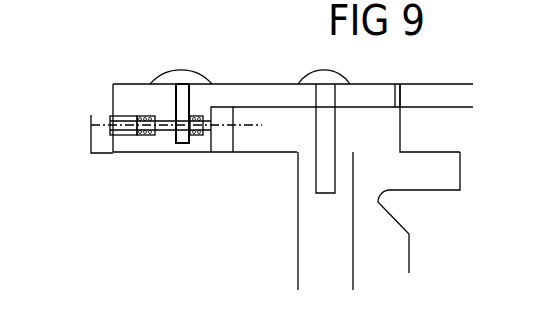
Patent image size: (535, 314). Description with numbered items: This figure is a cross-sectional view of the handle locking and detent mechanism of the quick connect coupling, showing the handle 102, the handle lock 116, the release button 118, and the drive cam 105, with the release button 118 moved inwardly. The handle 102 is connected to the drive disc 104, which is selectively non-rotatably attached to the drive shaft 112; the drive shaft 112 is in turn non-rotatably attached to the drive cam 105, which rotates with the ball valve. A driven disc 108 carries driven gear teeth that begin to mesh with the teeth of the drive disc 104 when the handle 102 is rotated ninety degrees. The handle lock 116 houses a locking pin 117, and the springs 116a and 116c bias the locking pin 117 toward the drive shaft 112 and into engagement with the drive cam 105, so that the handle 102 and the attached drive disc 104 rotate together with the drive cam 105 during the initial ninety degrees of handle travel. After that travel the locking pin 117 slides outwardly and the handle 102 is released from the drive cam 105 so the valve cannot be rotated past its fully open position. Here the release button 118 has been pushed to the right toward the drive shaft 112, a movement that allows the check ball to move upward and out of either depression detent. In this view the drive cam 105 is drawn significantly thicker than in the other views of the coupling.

The handle 102 is at (257, 90).
The drive disc 104 is at (358, 92).
The drive cam 105 is at (387, 125).
The driven disc 108 is at (427, 92).
The drive shaft 112 is at (320, 212).
The handle lock 116 is at (142, 134).
The spring 116a is at (143, 115).
The spring 116c is at (196, 116).
The locking pin 117 is at (220, 130).
The release button 118 is at (180, 77).